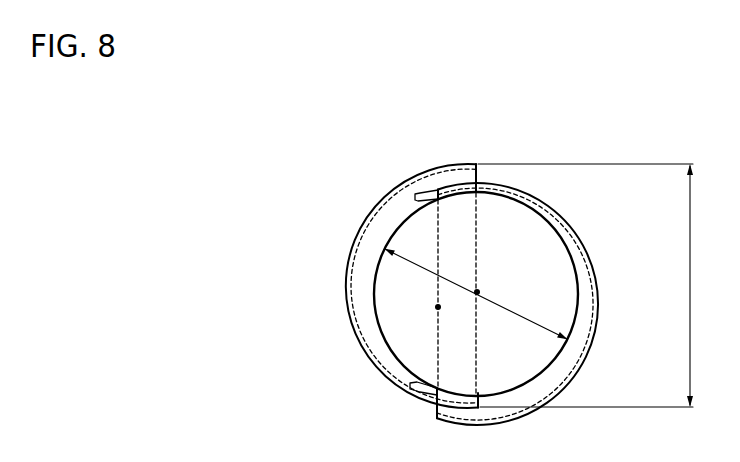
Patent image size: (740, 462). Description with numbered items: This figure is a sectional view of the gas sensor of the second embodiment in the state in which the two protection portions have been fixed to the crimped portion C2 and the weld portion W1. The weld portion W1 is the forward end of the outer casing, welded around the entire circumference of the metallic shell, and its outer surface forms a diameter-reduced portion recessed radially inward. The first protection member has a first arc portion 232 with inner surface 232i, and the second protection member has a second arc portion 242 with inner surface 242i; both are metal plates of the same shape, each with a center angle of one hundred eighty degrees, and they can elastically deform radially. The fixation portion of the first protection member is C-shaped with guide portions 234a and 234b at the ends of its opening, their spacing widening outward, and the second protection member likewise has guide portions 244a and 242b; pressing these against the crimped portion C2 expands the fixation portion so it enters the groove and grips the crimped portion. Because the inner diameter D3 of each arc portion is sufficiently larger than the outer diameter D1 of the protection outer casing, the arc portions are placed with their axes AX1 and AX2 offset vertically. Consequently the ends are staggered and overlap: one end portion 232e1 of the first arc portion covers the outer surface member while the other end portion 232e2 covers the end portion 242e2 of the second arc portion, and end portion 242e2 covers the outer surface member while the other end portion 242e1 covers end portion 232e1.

The first arc portion 232 is at (434, 290).
The inner surface of first arc portion 232i is at (437, 165).
The one end portion of first arc portion 232e1 is at (480, 407).
The other end portion of first arc portion 232e2 is at (478, 164).
The second arc portion 242 is at (490, 304).
The inner surface of second arc portion 242i is at (598, 352).
The other end portion of second arc portion 242e1 is at (437, 412).
The one end portion of second arc portion 242e2 is at (438, 187).
The guide portion 242b is at (410, 387).
The guide portion 244a is at (415, 197).
The guide portion 234a is at (568, 389).
The guide portion 234b is at (538, 198).
The axis of first arc portion AX1 is at (496, 294).
The axis of second arc portion AX2 is at (415, 294).
The crimped portion C2 is at (508, 294).
The weld portion W1 is at (568, 238).
The outer diameter of protection outer casing D1 is at (509, 318).
The inner diameter of arc portion D3 is at (589, 285).